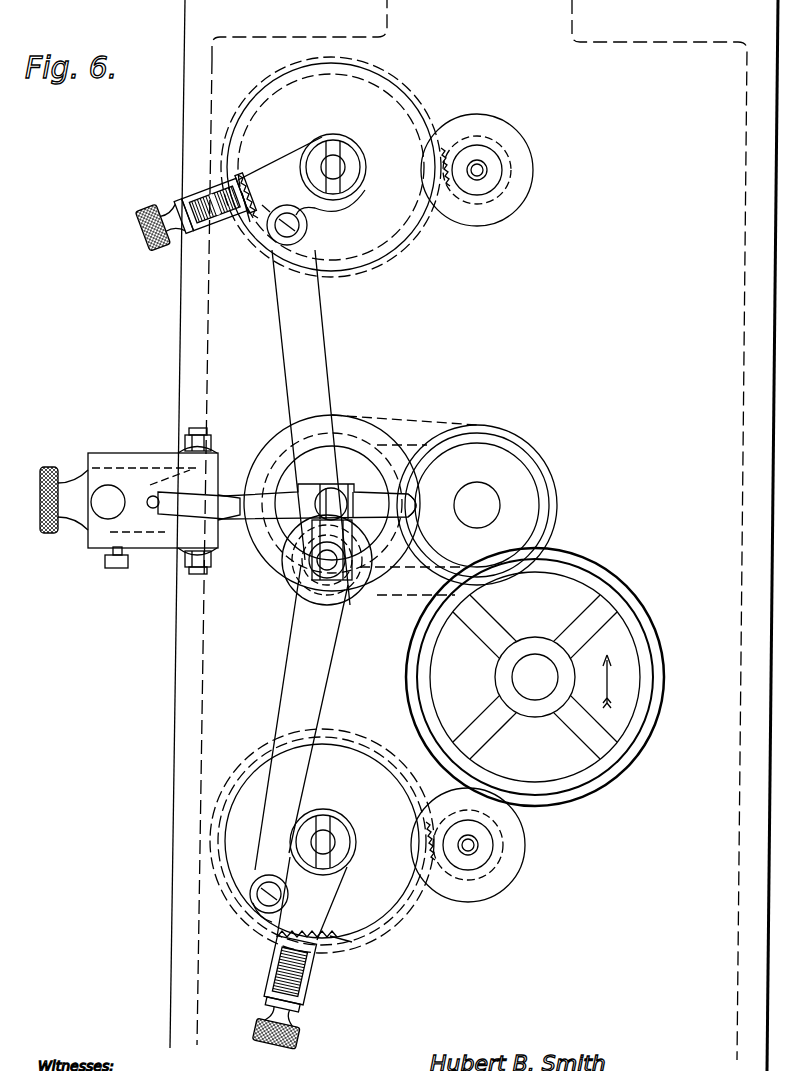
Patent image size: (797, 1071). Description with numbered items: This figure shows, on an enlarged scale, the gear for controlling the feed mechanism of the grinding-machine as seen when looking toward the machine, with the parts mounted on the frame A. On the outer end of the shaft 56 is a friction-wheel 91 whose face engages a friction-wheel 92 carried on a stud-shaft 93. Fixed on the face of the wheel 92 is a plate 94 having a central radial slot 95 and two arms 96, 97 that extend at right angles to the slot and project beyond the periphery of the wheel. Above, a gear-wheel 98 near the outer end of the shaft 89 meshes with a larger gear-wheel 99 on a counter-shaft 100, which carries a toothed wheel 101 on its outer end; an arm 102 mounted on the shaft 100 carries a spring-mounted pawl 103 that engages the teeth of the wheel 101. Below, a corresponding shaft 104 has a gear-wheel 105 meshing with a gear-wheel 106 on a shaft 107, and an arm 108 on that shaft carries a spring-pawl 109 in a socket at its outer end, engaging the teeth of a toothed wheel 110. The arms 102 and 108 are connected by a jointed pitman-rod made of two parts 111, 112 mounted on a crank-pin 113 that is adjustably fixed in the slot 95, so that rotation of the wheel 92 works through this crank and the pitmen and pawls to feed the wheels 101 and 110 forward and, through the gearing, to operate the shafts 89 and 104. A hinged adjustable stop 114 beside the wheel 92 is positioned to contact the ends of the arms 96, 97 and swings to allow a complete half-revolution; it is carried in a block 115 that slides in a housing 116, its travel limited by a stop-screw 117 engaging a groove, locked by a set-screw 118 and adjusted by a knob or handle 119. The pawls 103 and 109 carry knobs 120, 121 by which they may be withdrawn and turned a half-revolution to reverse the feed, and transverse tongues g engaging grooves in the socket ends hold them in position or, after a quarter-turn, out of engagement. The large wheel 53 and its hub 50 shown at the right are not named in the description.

The frame A is at (181, 718).
The gear-wheel 99 is at (386, 66).
The toothed wheel 101 is at (274, 123).
The counter-shaft 100 is at (342, 164).
The arm 102 is at (301, 191).
The spring-mounted pawl 103 is at (237, 220).
The knob 120 is at (143, 228).
The gear-wheel 98 is at (487, 123).
The shaft 89 is at (480, 170).
The pitman-rod part 112 is at (320, 322).
The friction-wheel 92 is at (367, 457).
The friction-wheel 91 is at (477, 505).
The shaft 56 is at (477, 505).
The arm 97 is at (252, 495).
The stud-shaft 93 is at (322, 493).
The central radial slot 95 is at (327, 488).
The plate 94 is at (352, 505).
The arm 96 is at (420, 500).
The crank-pin 113 is at (302, 577).
The housing 116 is at (117, 458).
The block 115 is at (85, 472).
The knob or handle 119 is at (39, 470).
The set-screw 118 is at (100, 510).
The stop-screw 117 is at (118, 572).
The hinged adjustable stop 114 is at (240, 540).
The pitman-rod part 111 is at (295, 660).
The drive wheel 53 is at (645, 620).
The main shaft 50 is at (535, 677).
The gear-wheel 106 is at (412, 897).
The shaft 107 is at (325, 840).
The arm 108 is at (325, 898).
The spring-pawl 109 is at (285, 942).
The toothed wheel 110 is at (352, 942).
The knob 121 is at (283, 1043).
The transverse tongue g is at (272, 990).
The gear-wheel 105 is at (495, 838).
The shaft 104 is at (477, 848).